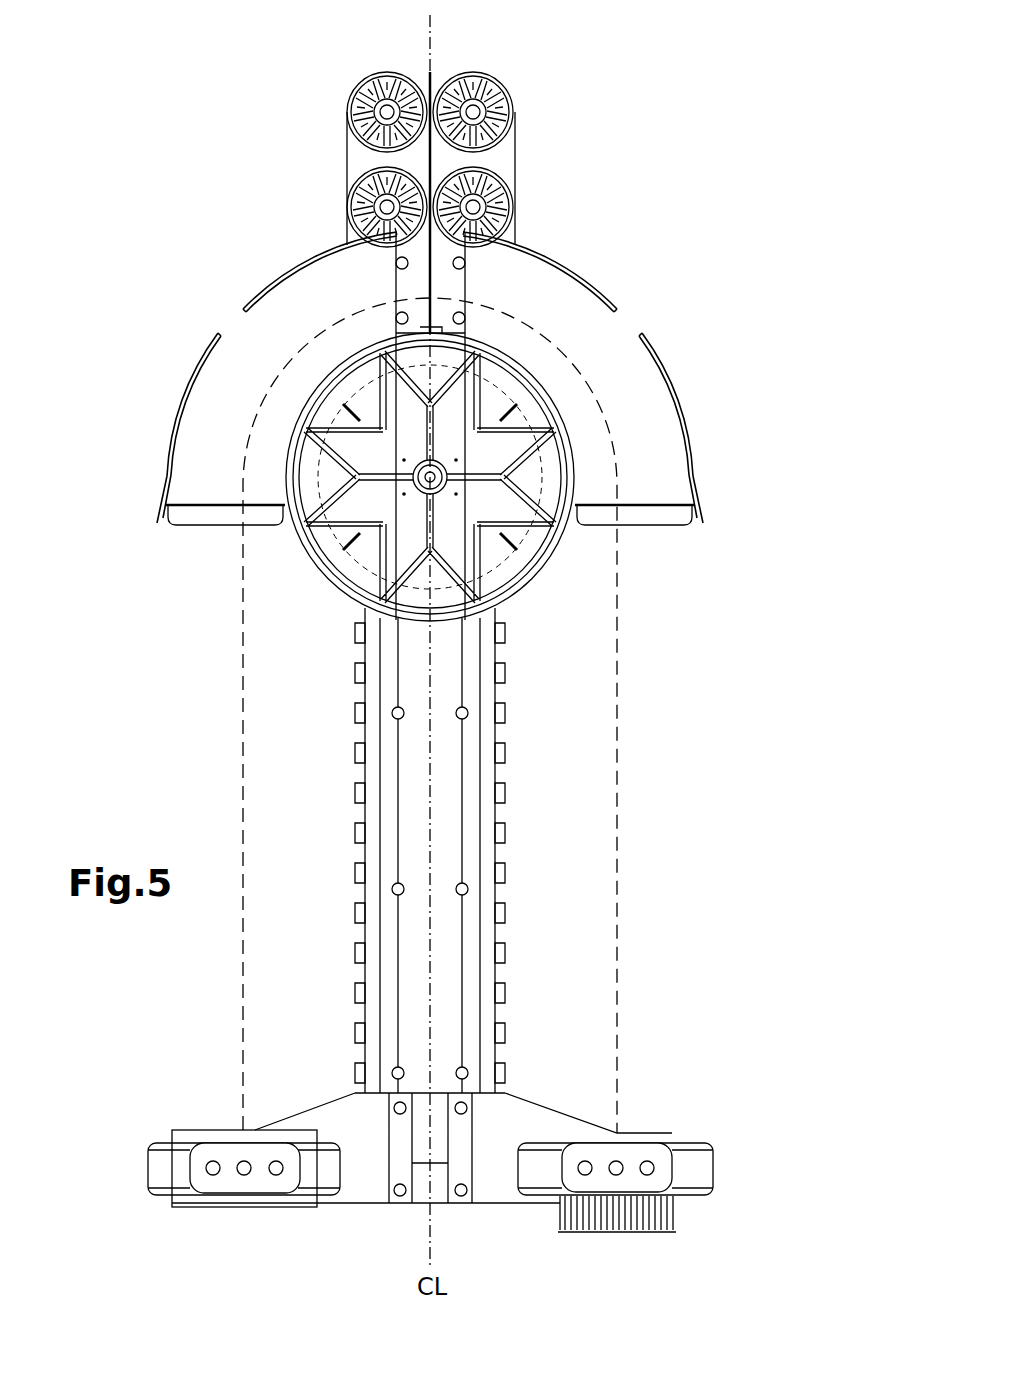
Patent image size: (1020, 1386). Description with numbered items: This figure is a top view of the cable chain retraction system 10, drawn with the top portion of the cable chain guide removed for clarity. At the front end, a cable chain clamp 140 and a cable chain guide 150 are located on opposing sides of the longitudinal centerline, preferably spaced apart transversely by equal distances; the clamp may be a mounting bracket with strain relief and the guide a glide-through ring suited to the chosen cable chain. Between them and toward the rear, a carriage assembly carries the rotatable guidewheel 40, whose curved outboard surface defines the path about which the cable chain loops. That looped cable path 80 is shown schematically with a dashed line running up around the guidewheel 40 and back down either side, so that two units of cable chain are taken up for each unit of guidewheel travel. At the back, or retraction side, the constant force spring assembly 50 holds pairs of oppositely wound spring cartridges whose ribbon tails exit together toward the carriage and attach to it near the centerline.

The cable chain retraction system 10 is at (778, 707).
The rotatable guidewheel 40 is at (512, 357).
The constant force spring assembly 50 is at (437, 72).
The cable path 80 is at (617, 888).
The cable chain clamp 140 is at (638, 1155).
The cable chain guide 150 is at (222, 1142).